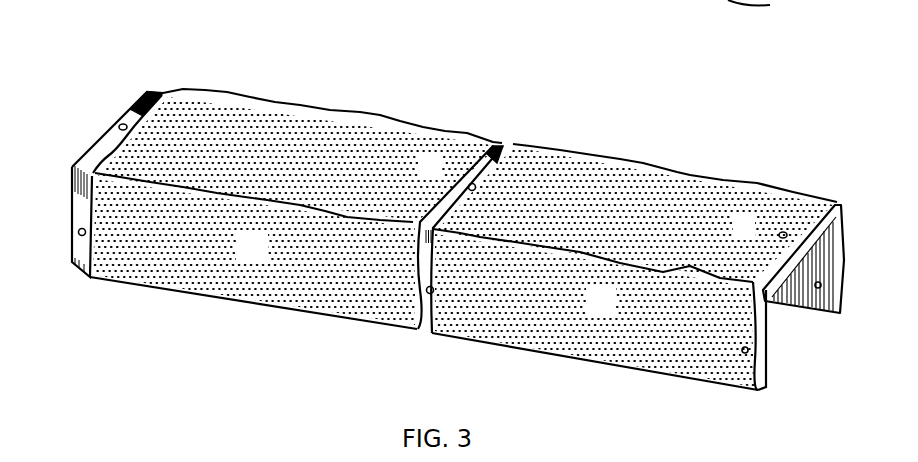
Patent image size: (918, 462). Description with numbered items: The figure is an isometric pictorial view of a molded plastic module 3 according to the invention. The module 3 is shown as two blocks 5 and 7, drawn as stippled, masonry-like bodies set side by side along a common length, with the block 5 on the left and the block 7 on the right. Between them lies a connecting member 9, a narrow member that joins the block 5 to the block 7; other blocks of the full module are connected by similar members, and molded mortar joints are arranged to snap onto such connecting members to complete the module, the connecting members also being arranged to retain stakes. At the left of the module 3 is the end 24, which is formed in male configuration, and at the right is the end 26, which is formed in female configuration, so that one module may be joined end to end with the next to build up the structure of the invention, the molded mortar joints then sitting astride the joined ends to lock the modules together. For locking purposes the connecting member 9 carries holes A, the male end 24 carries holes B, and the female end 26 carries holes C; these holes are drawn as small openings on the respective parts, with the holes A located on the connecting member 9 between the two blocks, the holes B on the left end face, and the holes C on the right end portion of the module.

The molded module 3 is at (303, 88).
The block 5 is at (258, 256).
The block 7 is at (608, 309).
The connecting member 9 is at (428, 329).
The end 24 is at (137, 112).
The end 26 is at (840, 203).
The holes A is at (468, 188).
The holes B is at (119, 128).
The holes C is at (779, 236).